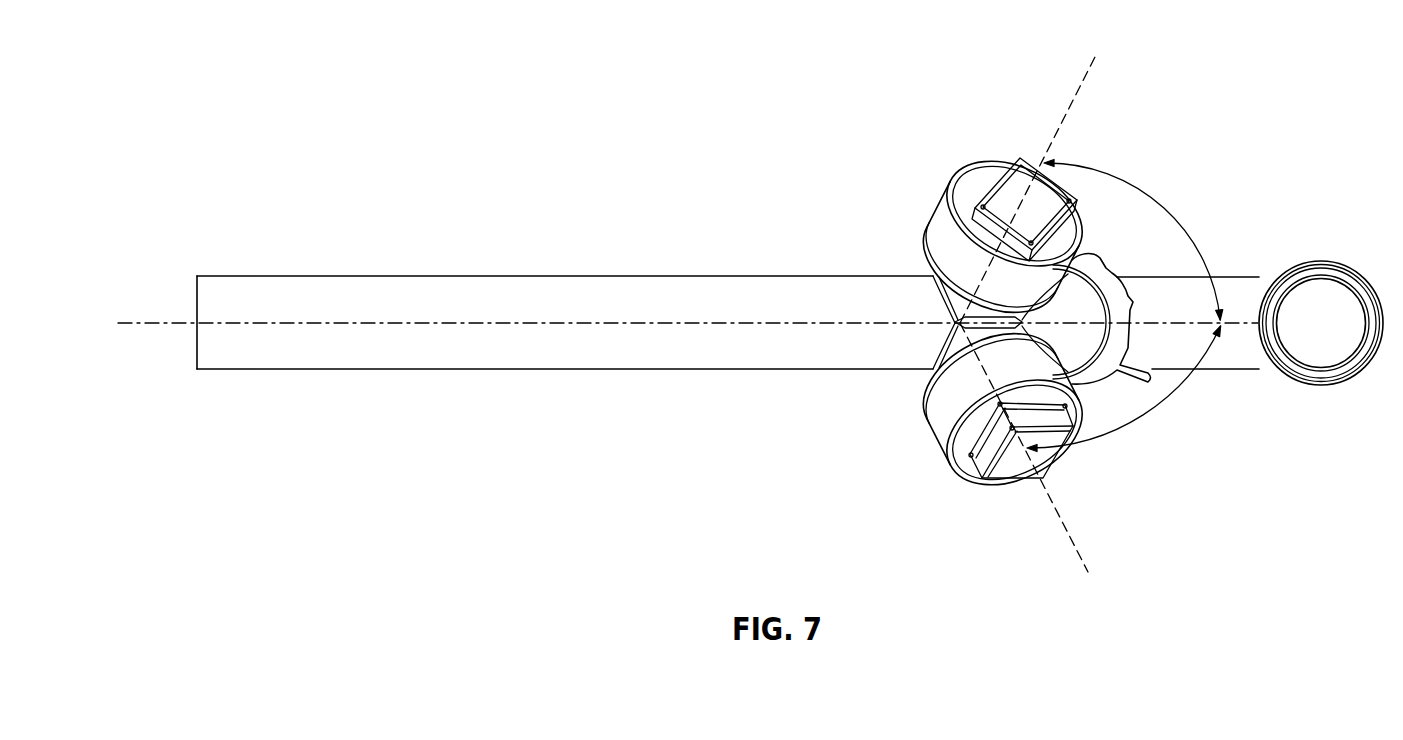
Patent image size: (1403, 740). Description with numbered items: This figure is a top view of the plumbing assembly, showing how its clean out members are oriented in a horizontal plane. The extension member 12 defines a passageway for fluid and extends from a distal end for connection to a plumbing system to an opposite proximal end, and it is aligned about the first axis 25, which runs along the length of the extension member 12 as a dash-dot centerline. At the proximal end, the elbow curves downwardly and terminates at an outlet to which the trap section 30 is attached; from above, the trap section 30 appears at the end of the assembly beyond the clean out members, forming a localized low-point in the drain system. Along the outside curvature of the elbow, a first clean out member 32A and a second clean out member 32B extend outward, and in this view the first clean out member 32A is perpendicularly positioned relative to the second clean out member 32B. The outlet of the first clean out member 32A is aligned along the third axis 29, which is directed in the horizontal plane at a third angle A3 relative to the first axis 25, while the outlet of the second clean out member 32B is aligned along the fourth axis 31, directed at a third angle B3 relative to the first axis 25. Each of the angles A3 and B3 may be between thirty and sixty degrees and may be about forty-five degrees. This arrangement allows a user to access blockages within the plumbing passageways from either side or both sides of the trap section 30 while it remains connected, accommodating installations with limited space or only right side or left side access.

The extension member 12 is at (462, 285).
The first axis 25 is at (140, 322).
The third axis 29 is at (1072, 543).
The trap section 30 is at (1258, 276).
The fourth axis 31 is at (1077, 90).
The first clean out member 32A is at (1065, 492).
The second clean out member 32B is at (1064, 148).
The third angle A3 is at (1142, 420).
The third angle B3 is at (1148, 193).